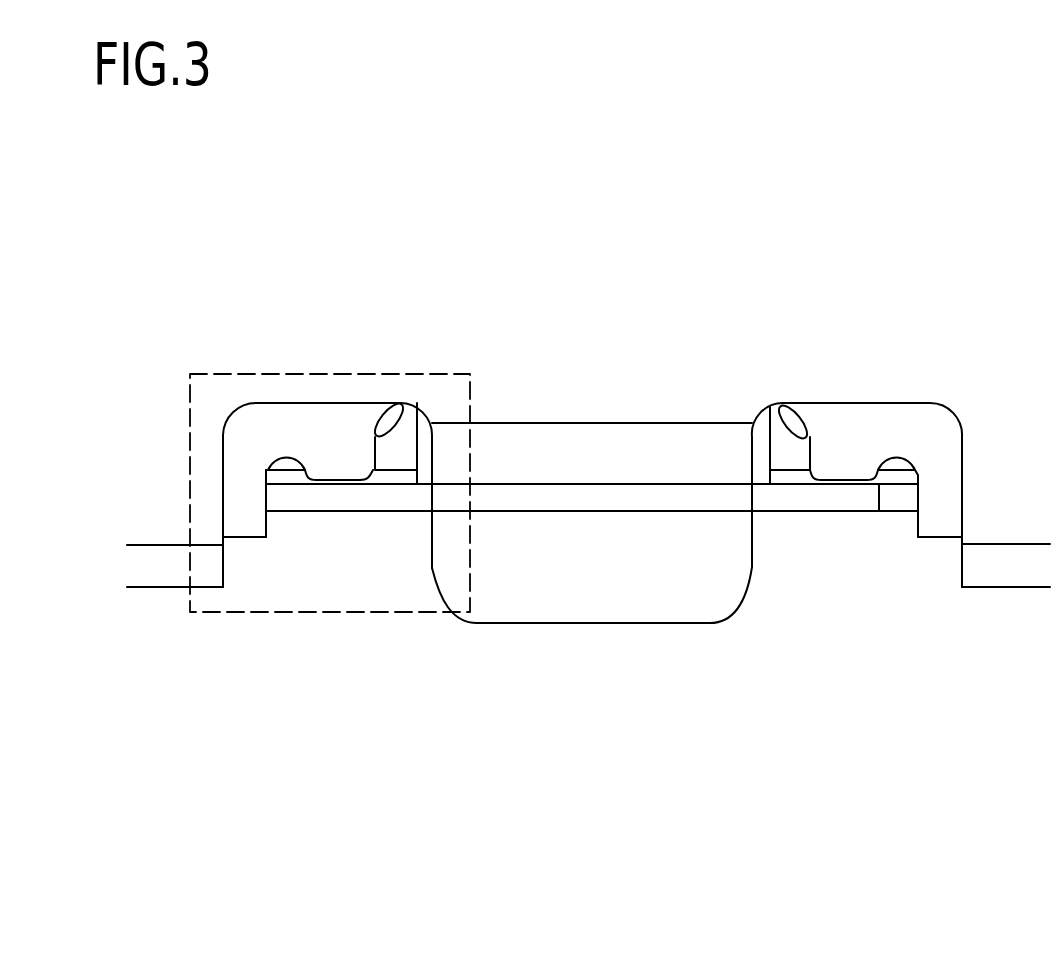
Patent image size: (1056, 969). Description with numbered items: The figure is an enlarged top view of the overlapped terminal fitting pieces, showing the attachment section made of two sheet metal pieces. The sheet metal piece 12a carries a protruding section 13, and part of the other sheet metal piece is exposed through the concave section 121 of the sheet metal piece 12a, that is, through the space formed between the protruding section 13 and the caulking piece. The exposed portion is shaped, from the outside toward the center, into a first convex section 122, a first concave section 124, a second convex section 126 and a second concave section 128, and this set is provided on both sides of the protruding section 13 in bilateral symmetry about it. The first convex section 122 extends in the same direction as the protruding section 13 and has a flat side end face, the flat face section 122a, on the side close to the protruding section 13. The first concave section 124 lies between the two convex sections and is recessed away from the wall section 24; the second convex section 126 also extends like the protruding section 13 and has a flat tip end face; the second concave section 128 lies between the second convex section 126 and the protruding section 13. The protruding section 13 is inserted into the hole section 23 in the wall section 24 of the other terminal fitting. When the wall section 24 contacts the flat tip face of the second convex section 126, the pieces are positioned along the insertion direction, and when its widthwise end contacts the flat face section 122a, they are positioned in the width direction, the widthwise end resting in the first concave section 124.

The sheet metal piece 12a is at (1003, 508).
The concave section 121 is at (362, 403).
The first convex section 122 is at (245, 515).
The flat face section 122a is at (266, 497).
The first concave section 124 is at (280, 458).
The second convex section 126 is at (350, 479).
The second concave section 128 is at (390, 403).
The protruding section 13 is at (527, 585).
The hole section 23 is at (625, 513).
The wall section 24 is at (790, 500).